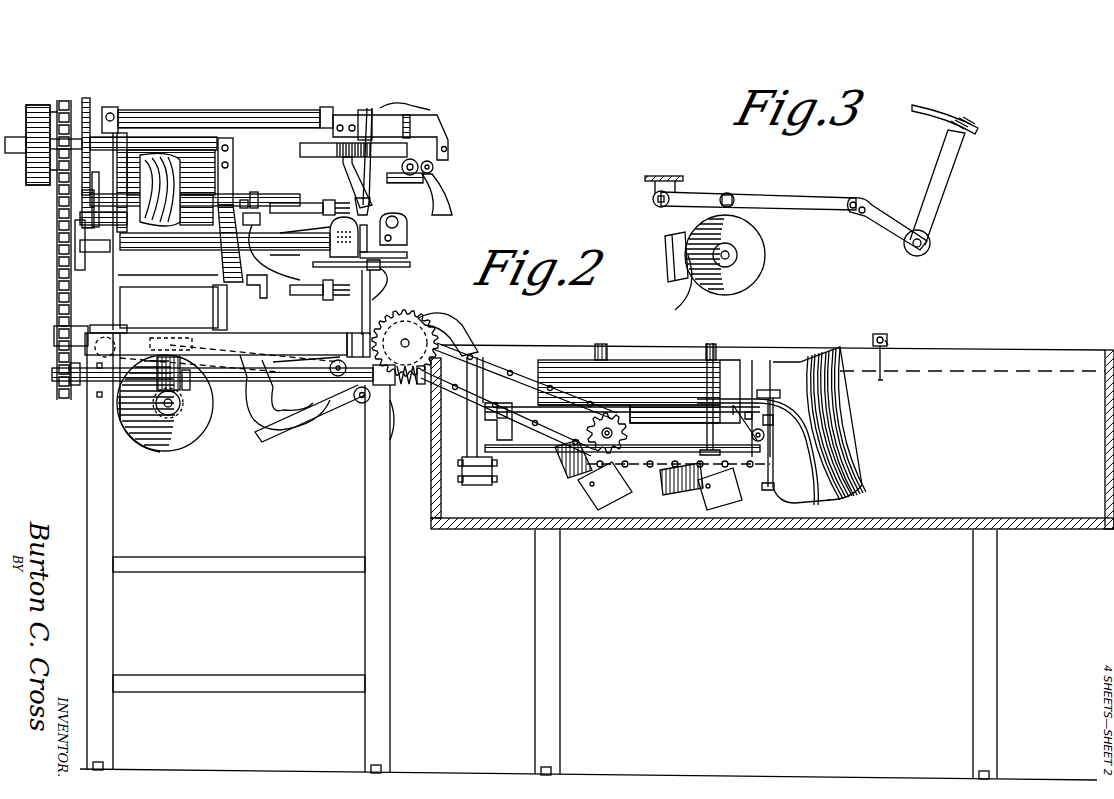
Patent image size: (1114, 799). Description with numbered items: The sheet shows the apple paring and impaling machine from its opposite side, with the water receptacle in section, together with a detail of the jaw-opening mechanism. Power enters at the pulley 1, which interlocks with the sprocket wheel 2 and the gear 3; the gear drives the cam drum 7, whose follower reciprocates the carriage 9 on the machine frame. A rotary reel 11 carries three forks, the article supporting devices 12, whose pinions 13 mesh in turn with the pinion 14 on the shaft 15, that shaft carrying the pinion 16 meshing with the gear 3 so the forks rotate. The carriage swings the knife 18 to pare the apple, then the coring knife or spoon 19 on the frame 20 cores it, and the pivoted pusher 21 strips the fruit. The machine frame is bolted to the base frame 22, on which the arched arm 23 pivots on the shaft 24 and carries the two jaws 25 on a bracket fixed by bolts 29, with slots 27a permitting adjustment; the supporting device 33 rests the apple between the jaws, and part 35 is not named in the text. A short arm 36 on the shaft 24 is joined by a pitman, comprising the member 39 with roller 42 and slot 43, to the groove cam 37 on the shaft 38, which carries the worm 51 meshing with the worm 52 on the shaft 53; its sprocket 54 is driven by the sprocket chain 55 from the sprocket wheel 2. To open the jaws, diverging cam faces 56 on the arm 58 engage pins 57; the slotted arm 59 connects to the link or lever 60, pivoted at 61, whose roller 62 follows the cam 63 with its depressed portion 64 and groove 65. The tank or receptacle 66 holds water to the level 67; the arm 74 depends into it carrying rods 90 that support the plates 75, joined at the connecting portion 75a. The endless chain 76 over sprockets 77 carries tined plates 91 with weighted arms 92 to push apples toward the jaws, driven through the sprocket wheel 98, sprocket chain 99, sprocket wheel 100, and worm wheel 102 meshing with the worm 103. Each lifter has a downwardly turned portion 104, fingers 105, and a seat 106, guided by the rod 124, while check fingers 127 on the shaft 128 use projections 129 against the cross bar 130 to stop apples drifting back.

In FIG. 2, the pulley 1 is at (32, 110).
In FIG. 2, the sprocket wheel 2 is at (68, 110).
In FIG. 2, the gear 3 is at (88, 108).
In FIG. 2, the cam drum 7 is at (205, 225).
In FIG. 2, the reciprocating carriage 9 is at (265, 116).
In FIG. 2, the rotary reel 11 is at (305, 210).
In FIG. 2, the article supporting devices 12 is at (345, 205).
In FIG. 2, the pinions 13 is at (252, 297).
In FIG. 2, the pinion 14 is at (255, 192).
In FIG. 2, the shaft 15 is at (160, 235).
In FIG. 2, the pinion 16 is at (85, 198).
In FIG. 2, the knife 18 is at (385, 190).
In FIG. 2, the coring knife or spoon 19 is at (448, 200).
In FIG. 2, the frame 20 is at (450, 156).
In FIG. 2, the pivoted pusher 21 is at (350, 178).
In FIG. 2, the base frame 22 is at (114, 514).
In FIG. 2, the arm 23 is at (395, 272).
In FIG. 2, the pivot shaft 24 is at (358, 404).
In FIG. 2, the jaws 25 is at (330, 250).
In FIG. 2, the slots 27a is at (407, 230).
In FIG. 2, the bolts 29 is at (418, 170).
In FIG. 2, the supporting device 33 is at (407, 254).
In FIG. 2, the arm 35 is at (284, 252).
In FIG. 2, the short arm 36 is at (352, 338).
In FIG. 2, the groove cam 37 is at (132, 455).
In FIG. 2, the shaft 38 is at (181, 403).
In FIG. 3, the shaft 38 is at (735, 262).
In FIG. 2, the pitman member 39 is at (332, 360).
In FIG. 2, the roller 42 is at (335, 300).
In FIG. 2, the slot 43 is at (239, 207).
In FIG. 2, the worm 51 is at (200, 410).
In FIG. 2, the worm 52 is at (208, 358).
In FIG. 2, the shaft 53 is at (252, 434).
In FIG. 2, the sprocket 54 is at (55, 373).
In FIG. 2, the sprocket chain 55 is at (55, 282).
In FIG. 2, the diverging cam faces 56 is at (372, 295).
In FIG. 3, the diverging cam faces 56 is at (972, 126).
In FIG. 2, the pins 57 is at (410, 265).
In FIG. 3, the arm 58 is at (962, 180).
In FIG. 3, the slotted arm 59 is at (880, 215).
In FIG. 2, the link or lever 60 is at (265, 353).
In FIG. 3, the link or lever 60 is at (805, 198).
In FIG. 2, the pivot 61 is at (140, 334).
In FIG. 3, the pivot 61 is at (676, 193).
In FIG. 2, the roller 62 is at (178, 334).
In FIG. 3, the roller 62 is at (735, 195).
In FIG. 2, the cam 63 is at (178, 452).
In FIG. 3, the cam 63 is at (768, 250).
In FIG. 3, the depressed portion 64 is at (685, 300).
In FIG. 3, the groove 65 is at (670, 265).
In FIG. 2, the tank or receptacle 66 is at (895, 531).
In FIG. 2, the water level 67 is at (985, 375).
In FIG. 2, the arm 74 is at (468, 412).
In FIG. 2, the plates 75 is at (639, 391).
In FIG. 2, the connecting portion 75a is at (855, 428).
In FIG. 2, the endless chain 76 is at (648, 470).
In FIG. 2, the sprockets 77 is at (700, 428).
In FIG. 2, the rods 90 is at (532, 452).
In FIG. 2, the plate 91 is at (568, 474).
In FIG. 2, the weighted arms 92 is at (722, 502).
In FIG. 2, the sprocket wheel 98 is at (590, 445).
In FIG. 2, the sprocket chain 99 is at (492, 362).
In FIG. 2, the sprocket wheel 100 is at (435, 338).
In FIG. 2, the worm wheel 102 is at (425, 320).
In FIG. 2, the worm 103 is at (415, 415).
In FIG. 2, the downwardly turned portion 104 is at (810, 472).
In FIG. 2, the tines or fingers 105 is at (757, 362).
In FIG. 2, the seat 106 is at (782, 388).
In FIG. 2, the rod 124 is at (752, 378).
In FIG. 3, the rod 124 is at (930, 243).
In FIG. 2, the fingers or arms 127 is at (883, 352).
In FIG. 2, the shaft 128 is at (872, 338).
In FIG. 2, the projection 129 is at (890, 338).
In FIG. 2, the cross bar 130 is at (882, 335).